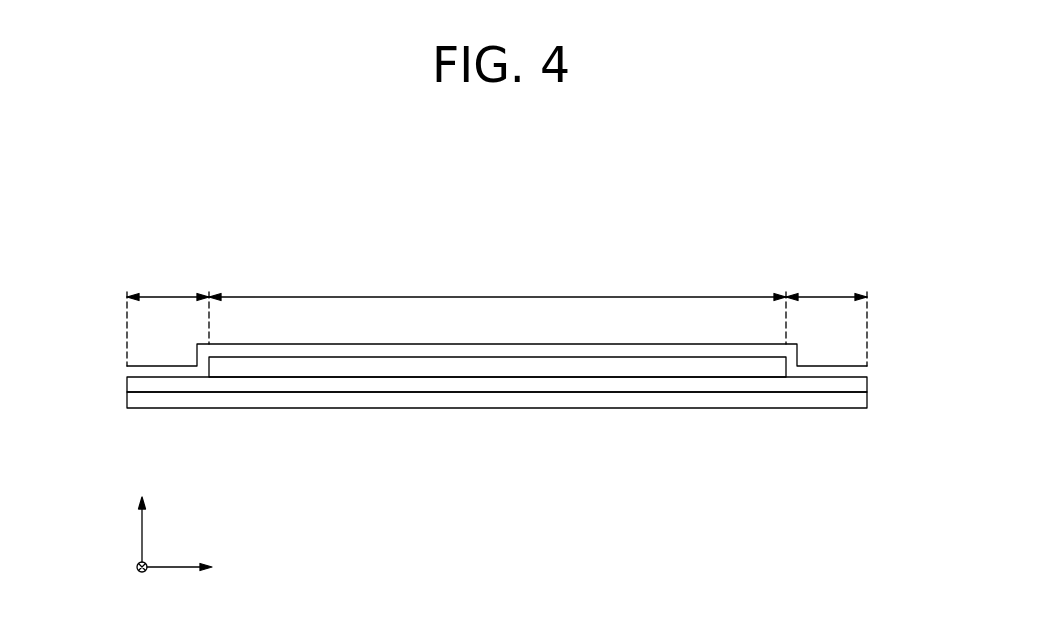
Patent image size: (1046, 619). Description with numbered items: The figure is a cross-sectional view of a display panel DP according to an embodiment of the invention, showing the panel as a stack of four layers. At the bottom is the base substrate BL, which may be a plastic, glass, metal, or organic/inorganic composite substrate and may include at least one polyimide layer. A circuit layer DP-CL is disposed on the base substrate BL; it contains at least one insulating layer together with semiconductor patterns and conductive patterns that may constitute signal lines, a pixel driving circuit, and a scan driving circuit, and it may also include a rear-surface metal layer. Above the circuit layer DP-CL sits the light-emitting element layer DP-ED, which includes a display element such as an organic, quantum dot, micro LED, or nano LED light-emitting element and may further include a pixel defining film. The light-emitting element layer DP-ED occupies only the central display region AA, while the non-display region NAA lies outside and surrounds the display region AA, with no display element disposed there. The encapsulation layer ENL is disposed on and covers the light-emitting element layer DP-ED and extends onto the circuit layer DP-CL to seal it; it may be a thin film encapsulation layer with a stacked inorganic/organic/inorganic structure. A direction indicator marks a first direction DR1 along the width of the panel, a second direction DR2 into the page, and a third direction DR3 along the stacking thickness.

The display panel DP is at (788, 239).
The base substrate BL is at (343, 402).
The circuit layer DP-CL is at (422, 385).
The light-emitting element layer DP-ED is at (513, 369).
The encapsulation layer ENL is at (606, 349).
The display region AA is at (497, 306).
The non-display region NAA is at (497, 317).
The first direction DR1 is at (198, 567).
The second direction DR2 is at (142, 582).
The third direction DR3 is at (142, 517).